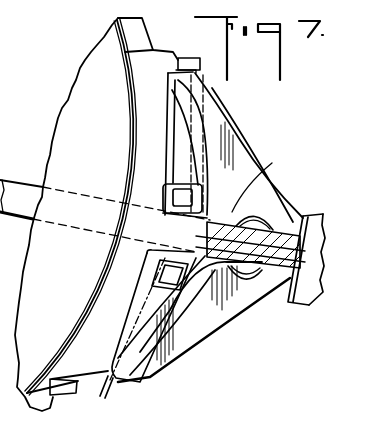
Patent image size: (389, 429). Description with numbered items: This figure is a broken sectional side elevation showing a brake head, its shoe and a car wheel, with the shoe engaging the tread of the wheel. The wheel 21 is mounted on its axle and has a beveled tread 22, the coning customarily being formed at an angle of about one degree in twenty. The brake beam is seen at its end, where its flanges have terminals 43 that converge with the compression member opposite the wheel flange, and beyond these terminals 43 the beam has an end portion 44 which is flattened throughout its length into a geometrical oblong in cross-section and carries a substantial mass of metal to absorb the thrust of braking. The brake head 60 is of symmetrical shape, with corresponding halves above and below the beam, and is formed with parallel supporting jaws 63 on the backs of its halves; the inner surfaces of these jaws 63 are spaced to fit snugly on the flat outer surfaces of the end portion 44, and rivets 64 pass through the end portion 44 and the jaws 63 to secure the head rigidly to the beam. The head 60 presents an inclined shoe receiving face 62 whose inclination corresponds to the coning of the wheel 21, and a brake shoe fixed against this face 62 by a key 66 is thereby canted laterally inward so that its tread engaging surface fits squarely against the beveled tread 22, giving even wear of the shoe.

The wheel 21 is at (84, 61).
The beveled tread 22 is at (77, 391).
The terminal 43 is at (298, 196).
The end portion 44 is at (200, 235).
The brake head 60 is at (243, 141).
The inclined shoe receiving face 62 is at (172, 86).
The supporting jaws 63 is at (206, 291).
The rivets 64 is at (262, 220).
The key 66 is at (193, 58).